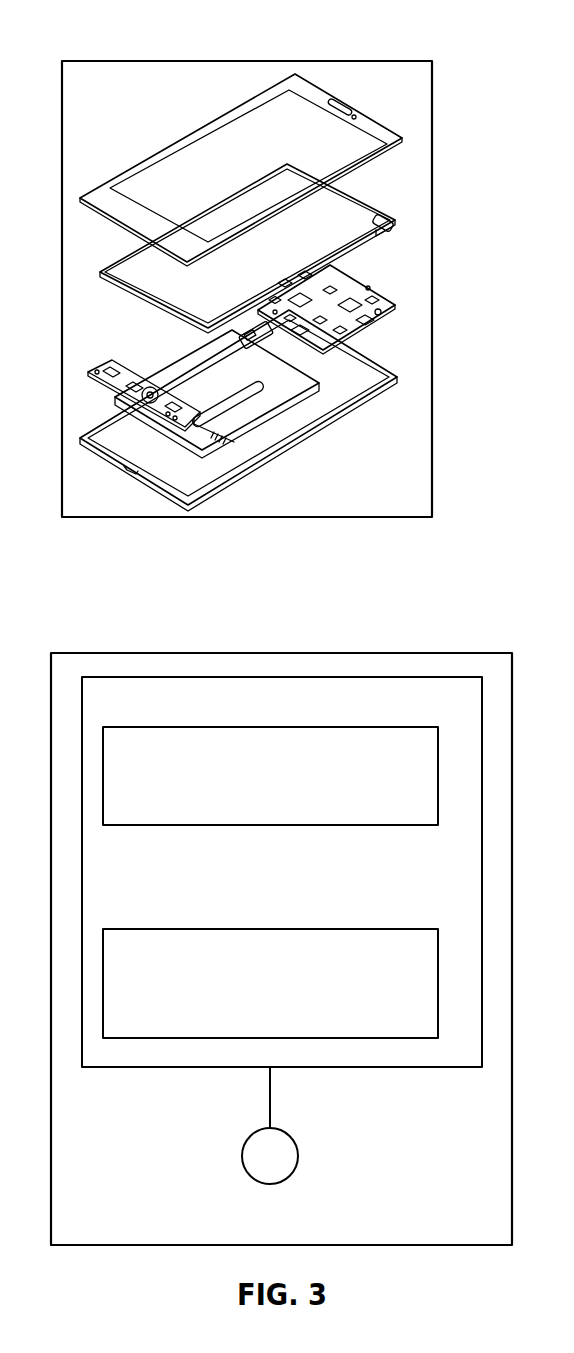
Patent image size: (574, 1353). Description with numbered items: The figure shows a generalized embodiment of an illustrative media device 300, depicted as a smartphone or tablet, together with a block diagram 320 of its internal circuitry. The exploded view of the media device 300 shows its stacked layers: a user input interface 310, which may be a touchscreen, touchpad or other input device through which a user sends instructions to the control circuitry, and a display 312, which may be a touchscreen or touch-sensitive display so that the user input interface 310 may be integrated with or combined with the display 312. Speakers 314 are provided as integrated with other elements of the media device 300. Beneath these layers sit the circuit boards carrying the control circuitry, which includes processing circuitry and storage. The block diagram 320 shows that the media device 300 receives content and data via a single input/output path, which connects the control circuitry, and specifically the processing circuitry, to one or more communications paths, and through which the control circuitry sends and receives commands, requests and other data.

The media device 300 is at (157, 57).
The user input interface 310 is at (241, 138).
The display 312 is at (341, 226).
The speakers 314 is at (333, 100).
The block diagram of device 320 is at (398, 650).